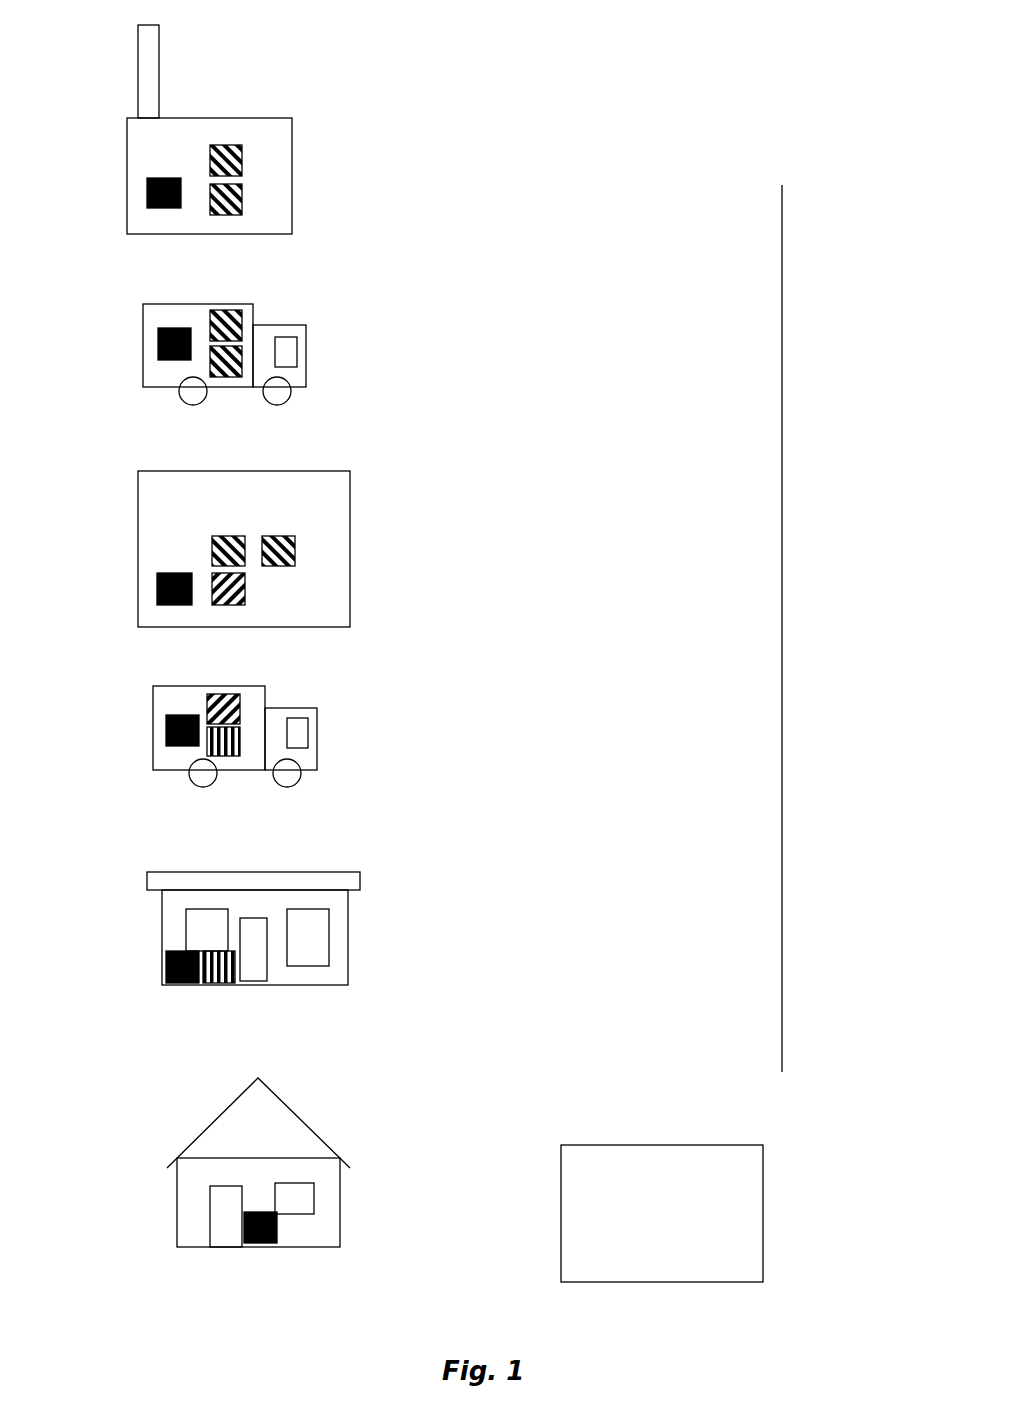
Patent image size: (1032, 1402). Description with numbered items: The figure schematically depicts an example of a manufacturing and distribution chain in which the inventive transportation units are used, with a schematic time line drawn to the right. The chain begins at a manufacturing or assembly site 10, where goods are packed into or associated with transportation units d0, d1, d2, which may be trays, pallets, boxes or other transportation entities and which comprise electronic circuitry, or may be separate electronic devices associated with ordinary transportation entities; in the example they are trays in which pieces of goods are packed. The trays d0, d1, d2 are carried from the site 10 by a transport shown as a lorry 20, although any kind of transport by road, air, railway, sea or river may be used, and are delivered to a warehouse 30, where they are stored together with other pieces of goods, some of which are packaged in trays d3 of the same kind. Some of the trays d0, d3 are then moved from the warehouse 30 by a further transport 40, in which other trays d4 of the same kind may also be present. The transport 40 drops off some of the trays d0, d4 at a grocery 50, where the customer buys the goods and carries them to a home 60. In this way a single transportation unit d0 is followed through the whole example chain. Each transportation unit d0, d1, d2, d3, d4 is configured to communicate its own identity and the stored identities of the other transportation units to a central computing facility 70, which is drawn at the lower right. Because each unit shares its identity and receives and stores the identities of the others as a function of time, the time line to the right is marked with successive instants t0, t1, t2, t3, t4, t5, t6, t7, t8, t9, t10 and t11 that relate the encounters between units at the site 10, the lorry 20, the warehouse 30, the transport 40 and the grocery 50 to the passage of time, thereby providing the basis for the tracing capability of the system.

The manufacturing or assembly site 10 is at (293, 123).
The lorry 20 is at (307, 352).
The warehouse 30 is at (350, 513).
The transport 40 is at (317, 728).
The grocery 50 is at (348, 937).
The home 60 is at (325, 1140).
The central computing facility 70 is at (690, 1163).
The transportation unit d0 is at (147, 192).
The transportation unit d1 is at (220, 145).
The transportation unit d2 is at (247, 350).
The tray d3 is at (240, 595).
The tray d4 is at (225, 757).
The time line mark t0 is at (675, 306).
The time line mark t1 is at (678, 343).
The time line mark t2 is at (676, 383).
The time line mark t3 is at (678, 417).
The time line mark t4 is at (676, 532).
The time line mark t5 is at (676, 566).
The time line mark t6 is at (676, 602).
The time line mark t7 is at (678, 638).
The time line mark t8 is at (674, 735).
The time line mark t9 is at (679, 768).
The time line mark t10 is at (665, 900).
The time line mark t11 is at (665, 932).